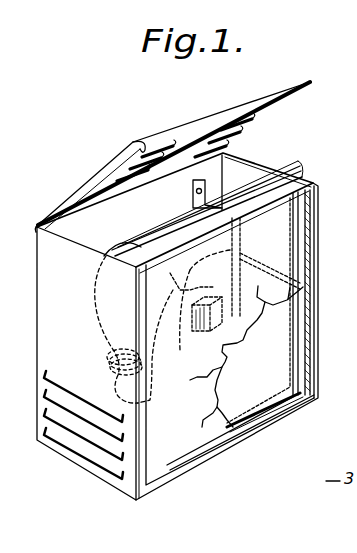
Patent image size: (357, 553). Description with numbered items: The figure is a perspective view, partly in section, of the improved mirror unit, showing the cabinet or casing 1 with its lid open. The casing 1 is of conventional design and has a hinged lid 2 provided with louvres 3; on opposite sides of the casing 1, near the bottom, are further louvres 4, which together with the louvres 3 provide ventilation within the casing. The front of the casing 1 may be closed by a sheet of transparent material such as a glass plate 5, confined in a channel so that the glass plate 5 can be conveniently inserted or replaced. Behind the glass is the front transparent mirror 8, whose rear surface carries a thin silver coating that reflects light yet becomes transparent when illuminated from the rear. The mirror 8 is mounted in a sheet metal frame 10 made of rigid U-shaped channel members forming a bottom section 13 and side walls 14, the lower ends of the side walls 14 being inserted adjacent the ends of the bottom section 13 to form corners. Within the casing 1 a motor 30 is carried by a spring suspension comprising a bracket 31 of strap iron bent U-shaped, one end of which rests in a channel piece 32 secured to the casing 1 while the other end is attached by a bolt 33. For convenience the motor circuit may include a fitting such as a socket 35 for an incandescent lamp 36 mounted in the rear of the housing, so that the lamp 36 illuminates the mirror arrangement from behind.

The cabinet or casing 1 is at (285, 165).
The hinged lid 2 is at (245, 105).
The louvres 3 is at (197, 147).
The louvres 4 is at (83, 437).
The glass plate 5 is at (183, 425).
The front transparent mirror 8 is at (257, 383).
The sheet metal frame 10 is at (283, 412).
The bottom section 13 is at (278, 408).
The side walls 14 is at (300, 320).
The motor 30 is at (232, 310).
The bracket 31 is at (205, 208).
The channel piece 32 is at (184, 326).
The bolt 33 is at (193, 196).
The socket 35 is at (107, 361).
The incandescent lamp 36 is at (120, 242).